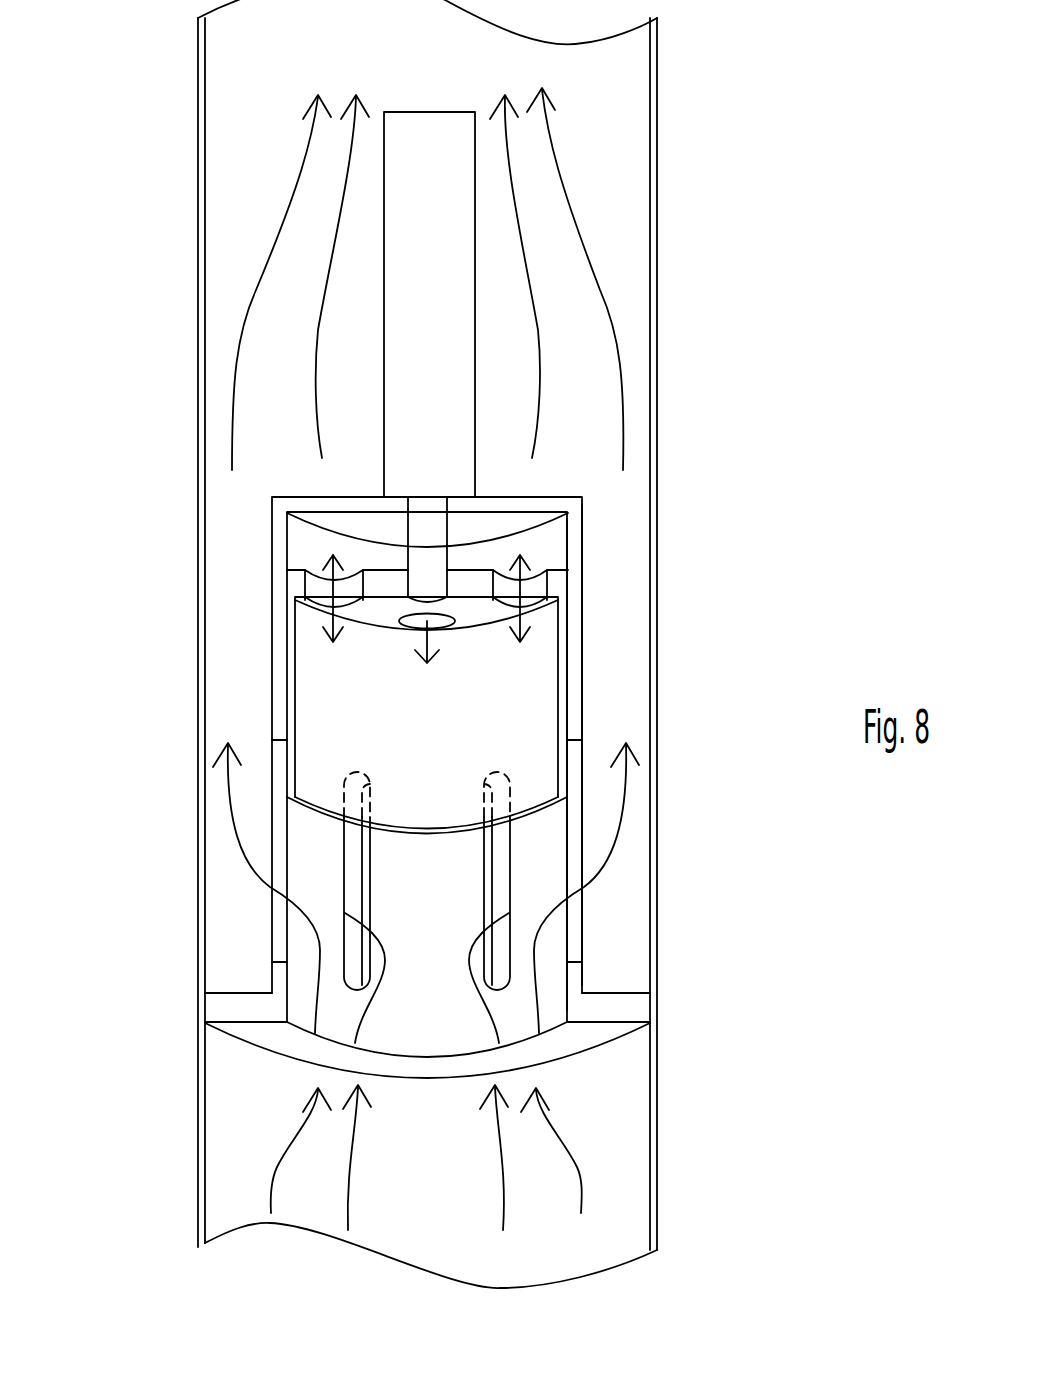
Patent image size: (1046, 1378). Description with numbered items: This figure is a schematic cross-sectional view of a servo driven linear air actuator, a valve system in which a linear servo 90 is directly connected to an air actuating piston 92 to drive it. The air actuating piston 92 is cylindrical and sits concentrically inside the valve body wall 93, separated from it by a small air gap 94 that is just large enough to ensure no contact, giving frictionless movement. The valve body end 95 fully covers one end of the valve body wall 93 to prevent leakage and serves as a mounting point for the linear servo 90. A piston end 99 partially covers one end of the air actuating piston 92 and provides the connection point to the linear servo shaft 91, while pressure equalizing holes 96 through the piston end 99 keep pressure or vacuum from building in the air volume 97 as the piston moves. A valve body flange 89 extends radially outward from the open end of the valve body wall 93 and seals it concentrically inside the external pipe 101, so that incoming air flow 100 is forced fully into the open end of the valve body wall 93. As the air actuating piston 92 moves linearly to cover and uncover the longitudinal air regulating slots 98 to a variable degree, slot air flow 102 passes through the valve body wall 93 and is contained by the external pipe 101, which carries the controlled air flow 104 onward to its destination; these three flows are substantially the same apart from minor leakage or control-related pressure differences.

The valve body flange 89 is at (593, 1042).
The linear servo 90 is at (445, 285).
The linear servo shaft 91 is at (427, 533).
The air actuating piston 92 is at (411, 702).
The valve body wall 93 is at (575, 625).
The air gap 94 is at (540, 814).
The valve body end 95 is at (341, 503).
The pressure equalizing holes 96 is at (321, 590).
The air volume 97 is at (368, 552).
The longitudinal air regulating slots 98 is at (500, 895).
The piston end 99 is at (470, 584).
The incoming air flow 100 is at (270, 1175).
The external pipe 101 is at (650, 1218).
The slot air flow 102 is at (258, 877).
The controlled air flow 104 is at (256, 290).